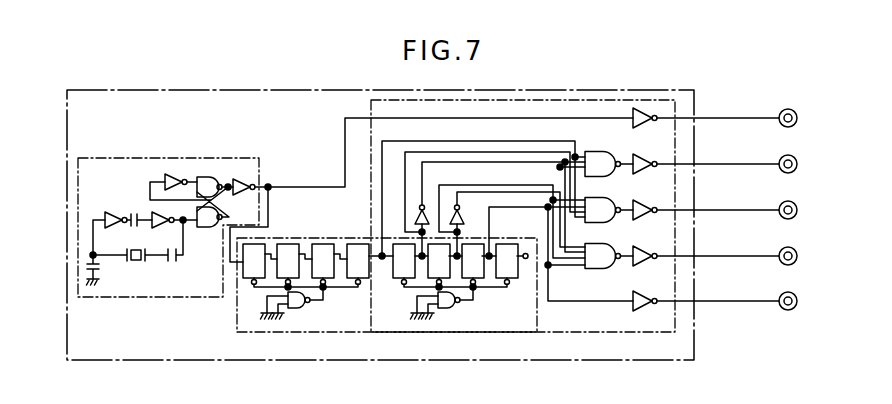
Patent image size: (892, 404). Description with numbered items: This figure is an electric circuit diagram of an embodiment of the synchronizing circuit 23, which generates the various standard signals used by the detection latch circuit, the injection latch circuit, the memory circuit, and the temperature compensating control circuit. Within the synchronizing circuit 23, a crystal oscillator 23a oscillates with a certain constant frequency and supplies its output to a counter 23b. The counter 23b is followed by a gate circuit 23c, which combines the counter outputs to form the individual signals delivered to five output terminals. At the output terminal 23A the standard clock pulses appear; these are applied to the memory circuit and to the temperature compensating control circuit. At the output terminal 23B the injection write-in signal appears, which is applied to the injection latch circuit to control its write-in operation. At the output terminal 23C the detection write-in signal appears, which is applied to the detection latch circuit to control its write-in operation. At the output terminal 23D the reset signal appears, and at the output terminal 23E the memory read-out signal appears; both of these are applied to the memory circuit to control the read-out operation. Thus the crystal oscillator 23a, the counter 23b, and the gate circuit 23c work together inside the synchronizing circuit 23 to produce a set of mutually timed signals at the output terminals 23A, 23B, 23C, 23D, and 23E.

The synchronizing circuit 23 is at (695, 328).
The crystal oscillator 23a is at (170, 129).
The counter 23b is at (335, 237).
The gate circuit 23c is at (604, 333).
The output terminal 23A is at (717, 102).
The output terminal 23B is at (717, 148).
The output terminal 23C is at (717, 194).
The output terminal 23D is at (717, 240).
The output terminal 23E is at (717, 286).